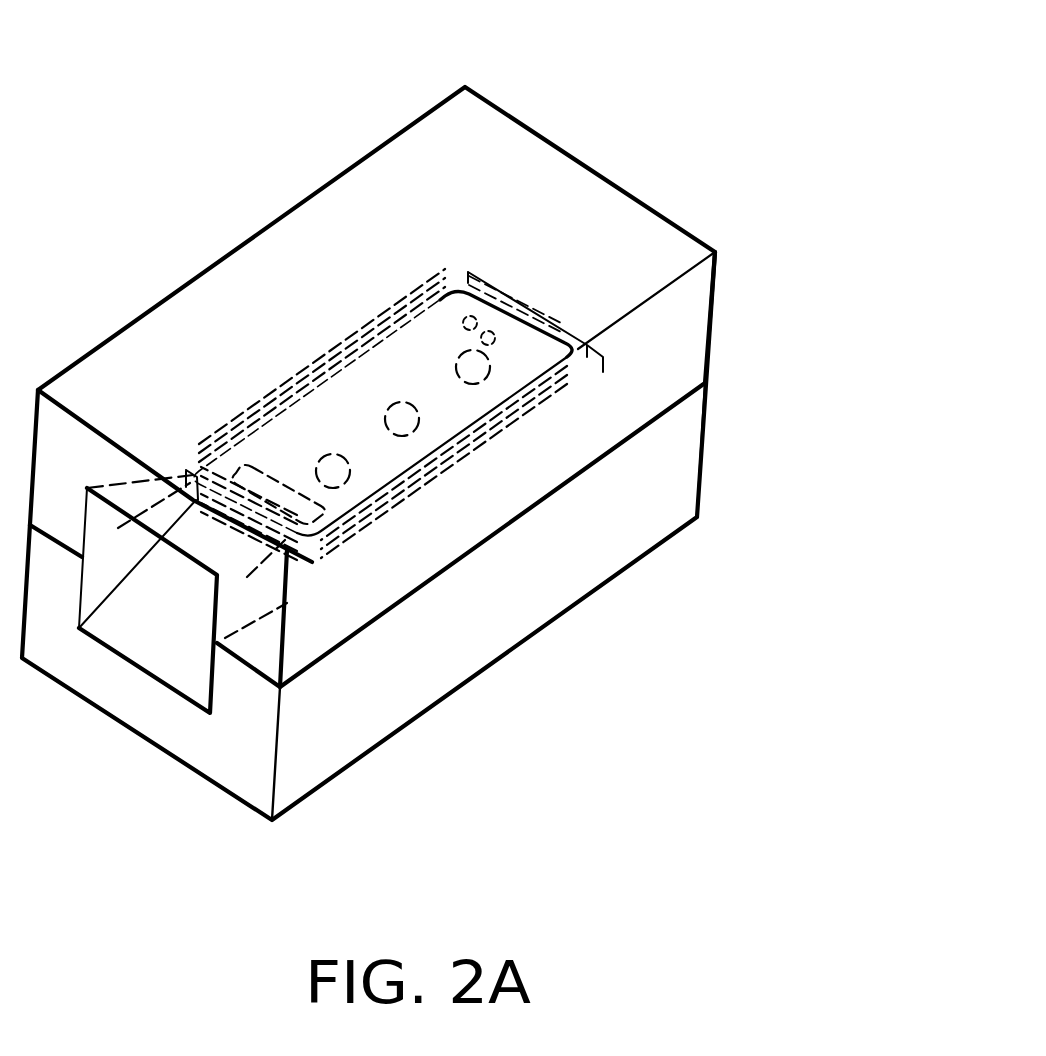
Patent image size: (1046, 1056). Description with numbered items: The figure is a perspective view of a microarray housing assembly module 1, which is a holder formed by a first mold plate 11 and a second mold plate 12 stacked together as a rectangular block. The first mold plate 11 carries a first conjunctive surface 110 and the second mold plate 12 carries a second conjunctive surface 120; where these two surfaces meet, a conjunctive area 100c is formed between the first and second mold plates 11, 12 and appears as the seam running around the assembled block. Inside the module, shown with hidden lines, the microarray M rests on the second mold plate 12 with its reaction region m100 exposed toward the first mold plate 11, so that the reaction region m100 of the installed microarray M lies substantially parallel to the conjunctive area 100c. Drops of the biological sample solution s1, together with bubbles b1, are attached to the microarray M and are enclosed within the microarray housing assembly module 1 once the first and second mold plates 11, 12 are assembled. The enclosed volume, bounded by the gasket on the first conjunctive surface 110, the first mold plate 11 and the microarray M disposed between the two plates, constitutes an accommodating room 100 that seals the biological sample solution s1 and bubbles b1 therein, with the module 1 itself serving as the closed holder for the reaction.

The microarray housing assembly module 1 is at (872, 325).
The first mold plate 11 is at (718, 445).
The second mold plate 12 is at (727, 297).
The accommodating room 100 is at (497, 291).
The conjunctive area 100c is at (689, 549).
The first conjunctive surface 110 is at (689, 549).
The second conjunctive surface 120 is at (473, 552).
The bubbles b1 is at (462, 300).
The reaction region m100 is at (423, 353).
The biological sample solution s1 is at (333, 466).
The microarray M is at (268, 482).